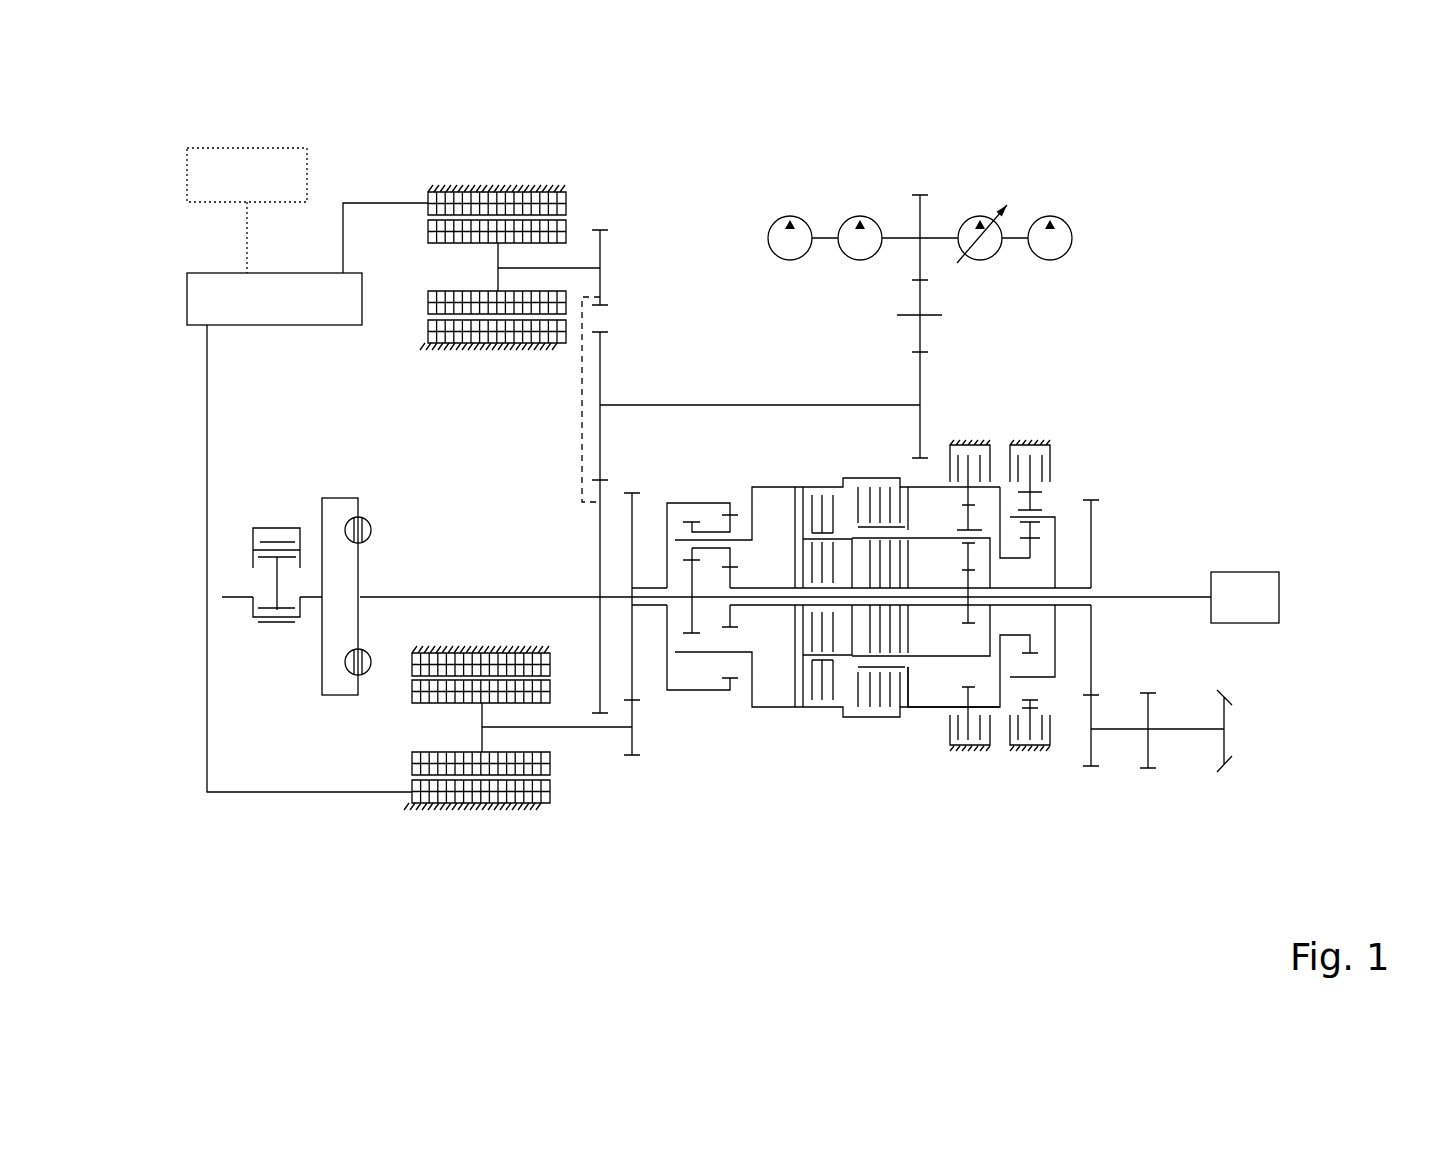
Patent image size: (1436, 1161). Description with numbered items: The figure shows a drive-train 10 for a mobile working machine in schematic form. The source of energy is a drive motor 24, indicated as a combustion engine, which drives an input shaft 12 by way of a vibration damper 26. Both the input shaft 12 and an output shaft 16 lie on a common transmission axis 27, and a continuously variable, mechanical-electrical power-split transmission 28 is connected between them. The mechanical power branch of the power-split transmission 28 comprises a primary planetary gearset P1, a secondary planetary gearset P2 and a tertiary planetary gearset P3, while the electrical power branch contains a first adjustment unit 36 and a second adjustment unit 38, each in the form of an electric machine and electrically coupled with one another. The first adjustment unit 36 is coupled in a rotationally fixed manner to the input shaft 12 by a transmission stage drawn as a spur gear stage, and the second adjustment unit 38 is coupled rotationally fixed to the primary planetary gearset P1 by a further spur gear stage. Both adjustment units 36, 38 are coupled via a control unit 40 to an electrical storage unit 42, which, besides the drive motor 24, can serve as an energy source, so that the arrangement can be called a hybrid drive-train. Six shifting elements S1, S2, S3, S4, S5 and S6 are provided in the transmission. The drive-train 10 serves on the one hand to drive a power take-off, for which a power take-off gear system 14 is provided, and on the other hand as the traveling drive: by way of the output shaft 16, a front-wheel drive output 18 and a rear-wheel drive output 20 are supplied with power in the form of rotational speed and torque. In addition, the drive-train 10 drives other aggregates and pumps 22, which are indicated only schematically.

The drive-train 10 is at (1203, 158).
The input shaft 12 is at (390, 597).
The power take-off gear system 14 is at (1266, 593).
The output shaft 16 is at (1091, 531).
The front-wheel drive output 18 is at (1147, 778).
The rear-wheel drive output 20 is at (1228, 778).
The aggregates and pumps 22 is at (1065, 190).
The drive motor 24 is at (277, 630).
The vibration damper 26 is at (342, 710).
The transmission axis 27 is at (390, 597).
The power-split transmission 28 is at (620, 797).
The first adjustment unit 36 is at (527, 172).
The second adjustment unit 38 is at (480, 830).
The control unit 40 is at (308, 285).
The electrical storage unit 42 is at (253, 162).
The first shifting element S1 is at (802, 480).
The second shifting element S2 is at (790, 550).
The third shifting element S3 is at (867, 472).
The fourth shifting element S4 is at (970, 440).
The fifth shifting element S5 is at (1040, 440).
The sixth shifting element S6 is at (912, 560).
The primary planetary gearset P1 is at (712, 712).
The secondary planetary gearset P2 is at (970, 762).
The tertiary planetary gearset P3 is at (1030, 762).